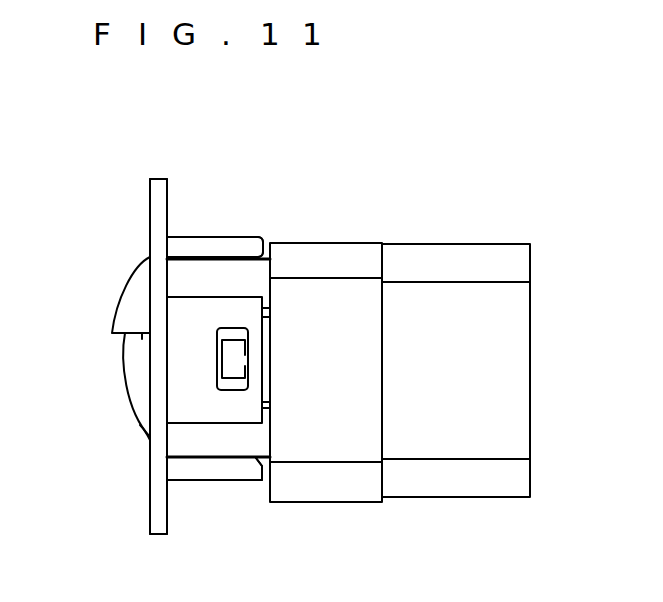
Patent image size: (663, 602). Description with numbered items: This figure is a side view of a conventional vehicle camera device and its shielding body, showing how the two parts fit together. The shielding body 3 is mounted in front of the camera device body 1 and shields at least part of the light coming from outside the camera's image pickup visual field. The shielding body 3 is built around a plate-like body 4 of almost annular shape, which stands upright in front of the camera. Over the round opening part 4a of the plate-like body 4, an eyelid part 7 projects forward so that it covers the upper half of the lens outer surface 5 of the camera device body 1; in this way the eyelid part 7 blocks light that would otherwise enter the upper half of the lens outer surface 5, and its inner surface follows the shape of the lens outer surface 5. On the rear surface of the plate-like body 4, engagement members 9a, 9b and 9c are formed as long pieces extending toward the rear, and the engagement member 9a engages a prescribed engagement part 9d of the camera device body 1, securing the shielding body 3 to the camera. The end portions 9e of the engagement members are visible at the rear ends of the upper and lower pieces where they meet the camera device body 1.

The camera device body 1 is at (368, 228).
The shielding body 3 is at (162, 172).
The plate-like body 4 is at (153, 503).
The round opening part 4a is at (143, 427).
The lens outer surface 5 is at (128, 360).
The eyelid part 7 is at (122, 302).
The engagement member 9a is at (250, 397).
The engagement member 9b is at (195, 245).
The engagement member 9c is at (198, 473).
The engagement part 9d is at (232, 353).
The flange end tab 9e is at (245, 250).